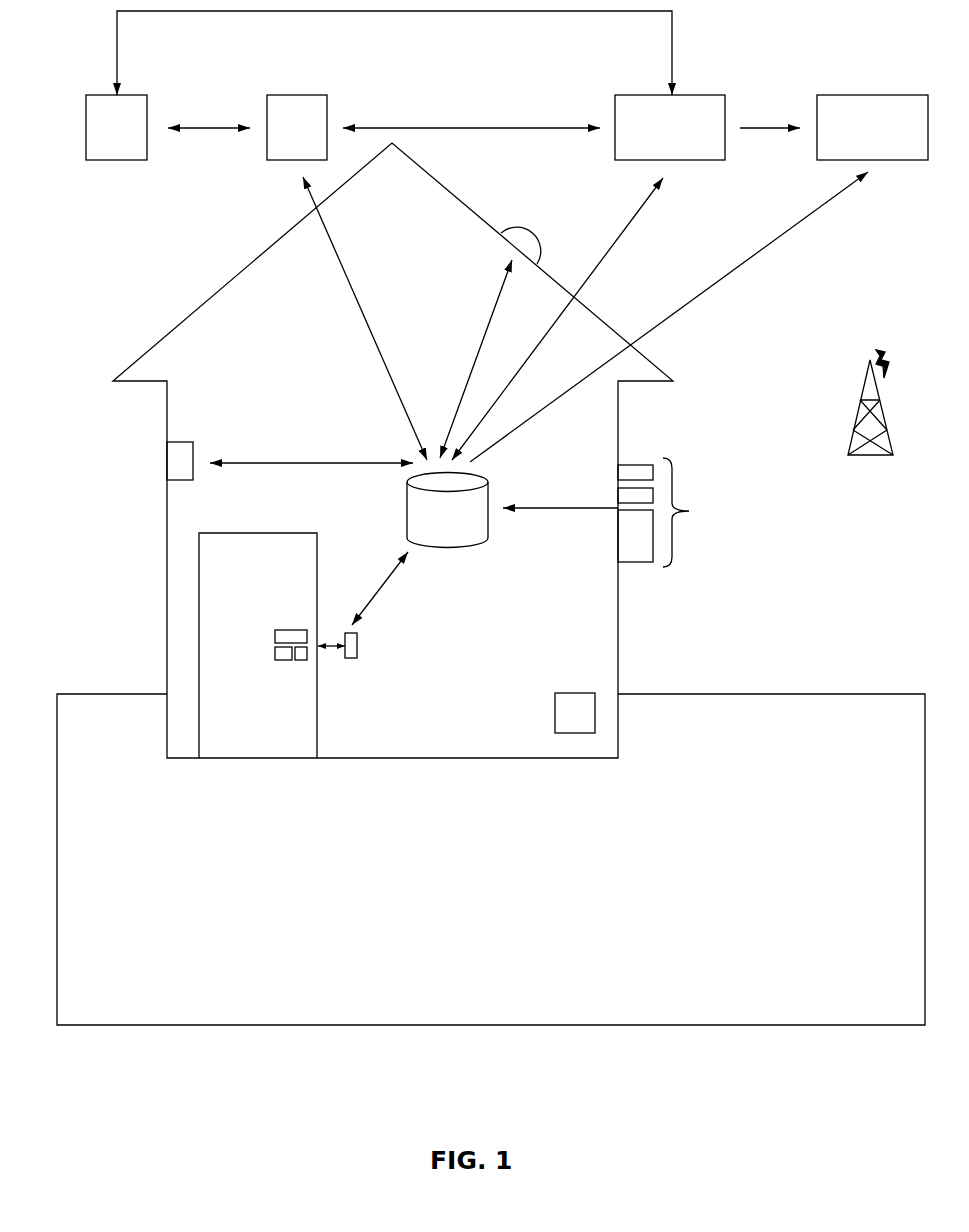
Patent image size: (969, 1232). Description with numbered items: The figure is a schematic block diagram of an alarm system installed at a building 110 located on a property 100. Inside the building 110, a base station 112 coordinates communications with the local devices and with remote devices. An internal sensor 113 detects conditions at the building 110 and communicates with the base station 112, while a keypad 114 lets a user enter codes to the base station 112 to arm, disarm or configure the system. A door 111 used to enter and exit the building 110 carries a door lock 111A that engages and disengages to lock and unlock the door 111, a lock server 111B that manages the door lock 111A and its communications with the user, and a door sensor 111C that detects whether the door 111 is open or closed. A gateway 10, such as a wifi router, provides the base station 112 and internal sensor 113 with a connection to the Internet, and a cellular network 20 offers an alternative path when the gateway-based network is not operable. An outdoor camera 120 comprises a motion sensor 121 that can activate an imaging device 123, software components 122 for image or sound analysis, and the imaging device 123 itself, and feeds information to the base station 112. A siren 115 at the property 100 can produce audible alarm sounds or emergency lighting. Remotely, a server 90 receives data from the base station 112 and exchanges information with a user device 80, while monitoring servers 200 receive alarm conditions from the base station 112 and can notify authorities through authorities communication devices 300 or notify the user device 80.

The gateway 10 is at (577, 702).
The cellular network 20 is at (855, 392).
The user device 80 is at (101, 103).
The server 90 is at (282, 103).
The property 100 is at (309, 1041).
The building 110 is at (102, 362).
The door 111 is at (257, 543).
The door lock 111A is at (288, 638).
The lock server 111B is at (277, 654).
The door sensor 111C is at (302, 656).
The base station 112 is at (447, 547).
The internal sensor 113 is at (178, 447).
The keypad 114 is at (352, 650).
The siren 115 is at (512, 233).
The outdoor camera 120 is at (704, 512).
The motion sensor 121 is at (635, 468).
The software components 122 is at (625, 498).
The imaging device 123 is at (635, 557).
The monitoring server 200 is at (629, 103).
The authorities communication devices 300 is at (833, 103).